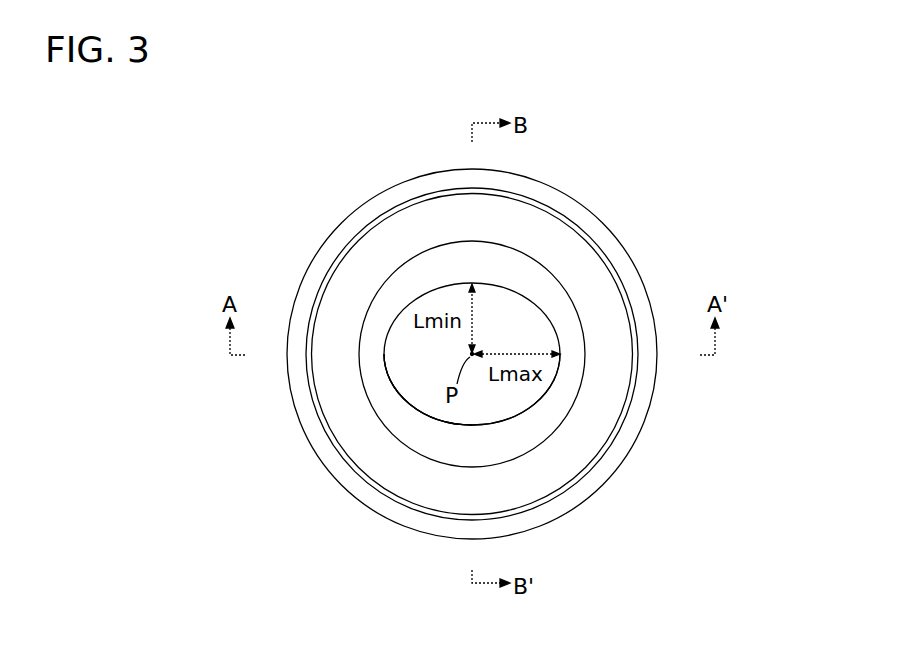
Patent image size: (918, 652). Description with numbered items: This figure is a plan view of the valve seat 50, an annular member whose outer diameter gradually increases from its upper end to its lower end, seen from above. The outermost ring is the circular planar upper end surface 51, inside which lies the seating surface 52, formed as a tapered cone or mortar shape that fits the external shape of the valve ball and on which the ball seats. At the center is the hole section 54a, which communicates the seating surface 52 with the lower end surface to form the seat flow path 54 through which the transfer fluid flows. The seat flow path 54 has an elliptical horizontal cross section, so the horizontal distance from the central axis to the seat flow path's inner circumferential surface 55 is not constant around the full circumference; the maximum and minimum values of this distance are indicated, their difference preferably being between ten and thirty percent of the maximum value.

The valve seat 50 is at (708, 238).
The upper end surface 51 is at (563, 252).
The seating surface 52 is at (437, 268).
The seat flow path 54 is at (411, 351).
The hole section 54a is at (488, 404).
The inner circumferential surface 55 is at (396, 390).